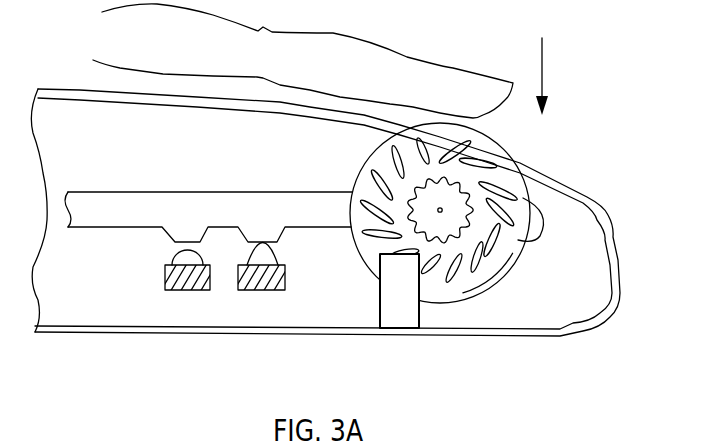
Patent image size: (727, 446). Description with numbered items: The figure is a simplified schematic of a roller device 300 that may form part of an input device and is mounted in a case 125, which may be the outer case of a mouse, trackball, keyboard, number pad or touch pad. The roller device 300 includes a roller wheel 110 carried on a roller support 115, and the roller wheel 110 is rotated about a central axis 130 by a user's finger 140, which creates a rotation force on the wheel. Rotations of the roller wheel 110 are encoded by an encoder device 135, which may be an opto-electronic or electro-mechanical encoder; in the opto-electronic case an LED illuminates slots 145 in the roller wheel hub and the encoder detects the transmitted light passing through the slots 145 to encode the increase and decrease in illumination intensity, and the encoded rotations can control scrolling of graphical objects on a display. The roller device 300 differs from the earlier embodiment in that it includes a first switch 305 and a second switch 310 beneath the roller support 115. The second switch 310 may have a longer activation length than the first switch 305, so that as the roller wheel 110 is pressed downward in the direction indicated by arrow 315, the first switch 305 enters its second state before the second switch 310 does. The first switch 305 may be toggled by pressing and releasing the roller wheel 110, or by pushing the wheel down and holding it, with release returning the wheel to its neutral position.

The roller device 300 is at (128, 146).
The roller wheel 110 is at (517, 259).
The roller support 115 is at (284, 187).
The case 125 is at (452, 337).
The central axis 130 is at (437, 212).
The encoder device 135 is at (372, 302).
The finger 140 is at (397, 42).
The slots 145 is at (553, 219).
The first switch 305 is at (260, 292).
The second switch 310 is at (165, 273).
The arrow 315 is at (560, 74).